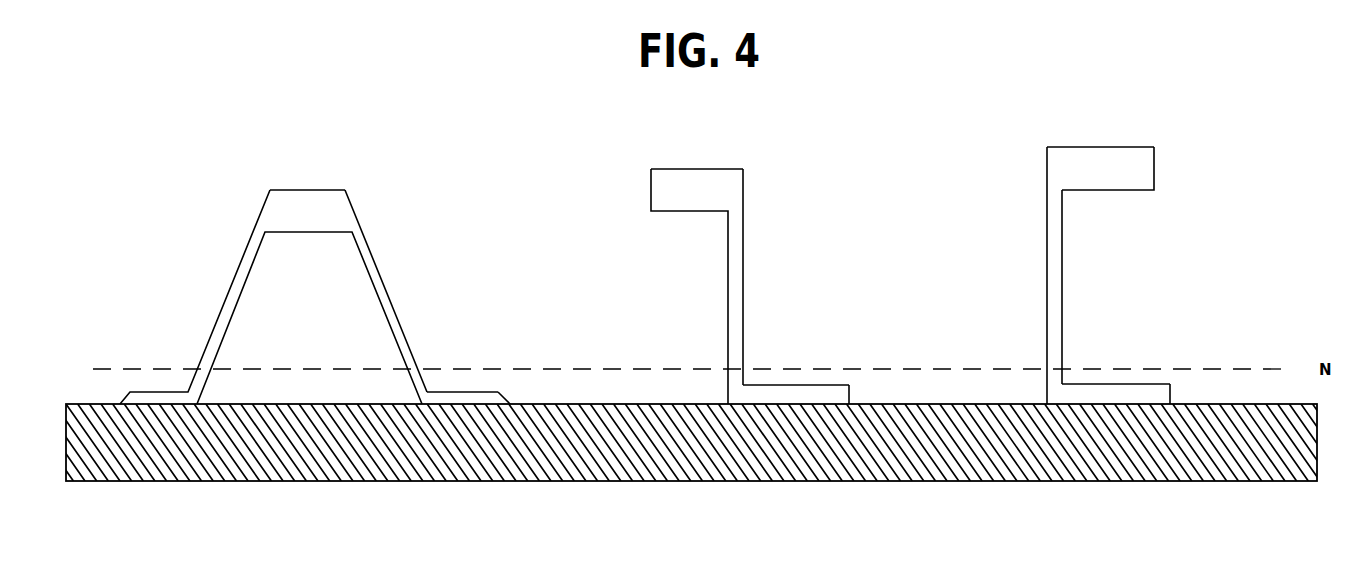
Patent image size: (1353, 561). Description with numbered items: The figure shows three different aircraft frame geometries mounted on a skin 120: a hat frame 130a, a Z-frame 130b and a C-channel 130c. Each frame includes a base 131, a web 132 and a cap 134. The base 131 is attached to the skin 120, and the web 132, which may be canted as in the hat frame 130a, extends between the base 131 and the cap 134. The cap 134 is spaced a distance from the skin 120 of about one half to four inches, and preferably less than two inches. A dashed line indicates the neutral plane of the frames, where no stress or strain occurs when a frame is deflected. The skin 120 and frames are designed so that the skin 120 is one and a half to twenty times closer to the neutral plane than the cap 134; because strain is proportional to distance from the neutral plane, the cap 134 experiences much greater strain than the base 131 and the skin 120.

The skin 120 is at (745, 481).
The hat frame 130a is at (280, 188).
The Z-frame 130b is at (667, 165).
The C-channel 130c is at (1065, 143).
The base 131 is at (458, 392).
The web 132 is at (397, 312).
The cap 134 is at (307, 190).